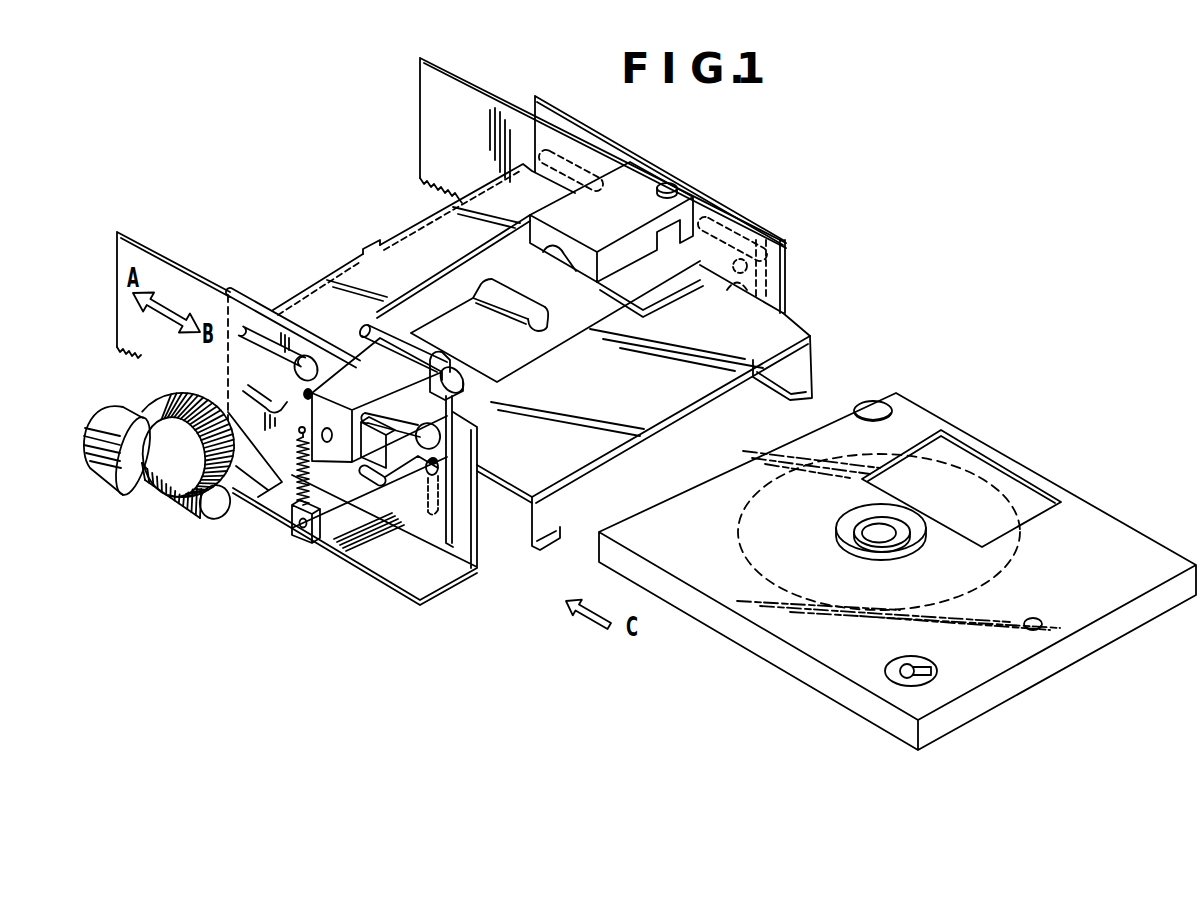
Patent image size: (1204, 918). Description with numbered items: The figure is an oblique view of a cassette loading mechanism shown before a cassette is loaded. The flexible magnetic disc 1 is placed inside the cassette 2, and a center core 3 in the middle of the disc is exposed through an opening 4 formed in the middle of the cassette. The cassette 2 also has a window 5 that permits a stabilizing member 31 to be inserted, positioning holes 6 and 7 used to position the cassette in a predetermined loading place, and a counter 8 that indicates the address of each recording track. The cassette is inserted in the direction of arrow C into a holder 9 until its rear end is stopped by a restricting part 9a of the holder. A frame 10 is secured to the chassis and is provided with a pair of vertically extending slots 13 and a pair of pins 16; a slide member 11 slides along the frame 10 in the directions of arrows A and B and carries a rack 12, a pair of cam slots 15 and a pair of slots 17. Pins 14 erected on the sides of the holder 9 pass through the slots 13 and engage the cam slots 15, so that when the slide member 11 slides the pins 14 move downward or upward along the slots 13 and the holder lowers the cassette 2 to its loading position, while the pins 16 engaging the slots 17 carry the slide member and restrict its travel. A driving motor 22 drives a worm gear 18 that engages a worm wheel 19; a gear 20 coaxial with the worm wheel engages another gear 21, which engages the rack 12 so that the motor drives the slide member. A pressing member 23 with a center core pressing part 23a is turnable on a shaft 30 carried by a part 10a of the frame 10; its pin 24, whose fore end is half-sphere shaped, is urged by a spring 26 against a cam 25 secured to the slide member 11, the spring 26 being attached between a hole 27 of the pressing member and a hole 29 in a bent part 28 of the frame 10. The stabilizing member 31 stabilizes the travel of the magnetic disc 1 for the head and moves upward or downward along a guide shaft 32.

The flexible magnetic disc 1 is at (975, 479).
The cassette 2 is at (929, 419).
The center core 3 is at (907, 536).
The opening 4 is at (843, 543).
The window 5 is at (1035, 490).
The positioning hole 6 is at (1034, 630).
The positioning hole 7 is at (870, 406).
The counter 8 is at (892, 674).
The holder 9 is at (519, 530).
The restricting part 9a is at (385, 241).
The frame 10 is at (758, 222).
The part of frame 10a is at (446, 356).
The slide member 11 is at (484, 90).
The rack 12 is at (444, 197).
The slot 13 is at (483, 532).
The pin 14 is at (311, 390).
The cam slot 15 is at (273, 393).
The pin 16 is at (306, 356).
The slot 17 is at (252, 316).
The worm gear 18 is at (199, 517).
The worm wheel 19 is at (170, 500).
The gear 20 is at (254, 478).
The gear 21 is at (190, 398).
The driving motor 22 is at (132, 490).
The pressing member 23 is at (490, 332).
The center core pressing part 23a is at (548, 318).
The pin 24 is at (330, 443).
The cam 25 is at (375, 523).
The spring 26 is at (296, 480).
The hole 27 is at (299, 431).
The bent part 28 is at (312, 543).
The hole 29 is at (303, 527).
The shaft 30 is at (372, 327).
The stabilizing member 31 is at (635, 170).
The guide shaft 32 is at (672, 186).